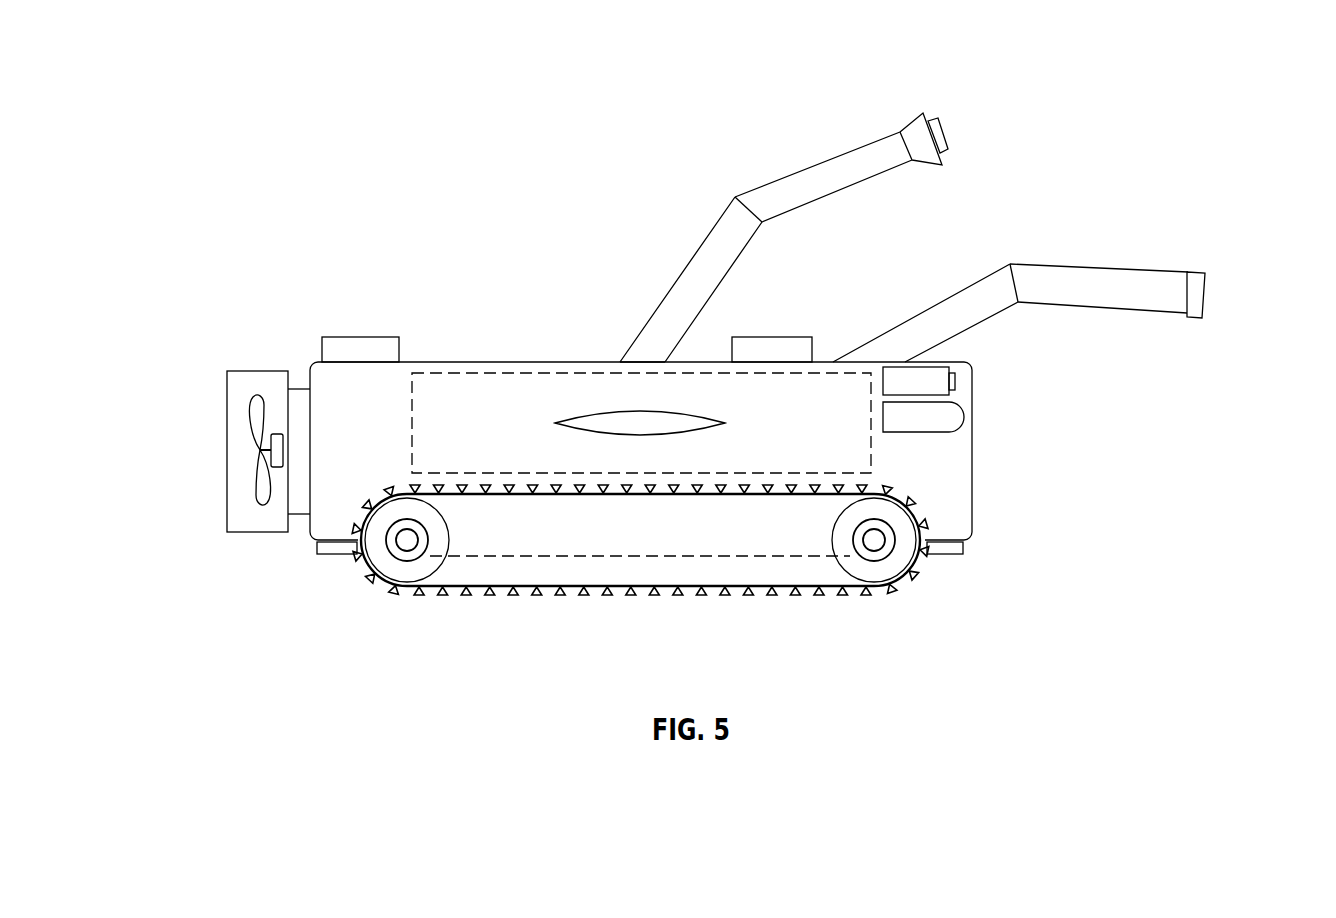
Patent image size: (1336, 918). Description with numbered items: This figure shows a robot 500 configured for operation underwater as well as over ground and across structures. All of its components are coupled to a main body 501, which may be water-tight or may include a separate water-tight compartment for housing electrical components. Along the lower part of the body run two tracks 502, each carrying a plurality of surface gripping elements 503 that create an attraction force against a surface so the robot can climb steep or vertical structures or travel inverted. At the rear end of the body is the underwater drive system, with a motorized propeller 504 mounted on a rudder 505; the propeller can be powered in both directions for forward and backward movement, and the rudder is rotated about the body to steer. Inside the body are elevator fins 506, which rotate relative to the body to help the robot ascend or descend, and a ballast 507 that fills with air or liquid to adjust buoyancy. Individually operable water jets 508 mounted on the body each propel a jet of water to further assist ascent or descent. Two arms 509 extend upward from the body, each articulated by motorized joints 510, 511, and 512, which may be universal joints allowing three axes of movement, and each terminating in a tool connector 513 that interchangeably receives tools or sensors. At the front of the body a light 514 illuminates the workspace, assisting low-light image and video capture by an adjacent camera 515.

The robot 500 is at (236, 98).
The main body 501 is at (543, 362).
The track 502 is at (520, 590).
The surface gripping element 503 is at (605, 592).
The motorized propeller 504 is at (260, 450).
The rudder 505 is at (240, 392).
The elevator fin 506 is at (558, 423).
The ballast 507 is at (463, 375).
The water jet 508 is at (360, 336).
The arm 509 is at (695, 268).
The joint 510 is at (620, 362).
The joint 511 is at (737, 197).
The joint 512 is at (902, 132).
The tool connector 513 is at (922, 157).
The light 514 is at (940, 417).
The camera 515 is at (940, 383).